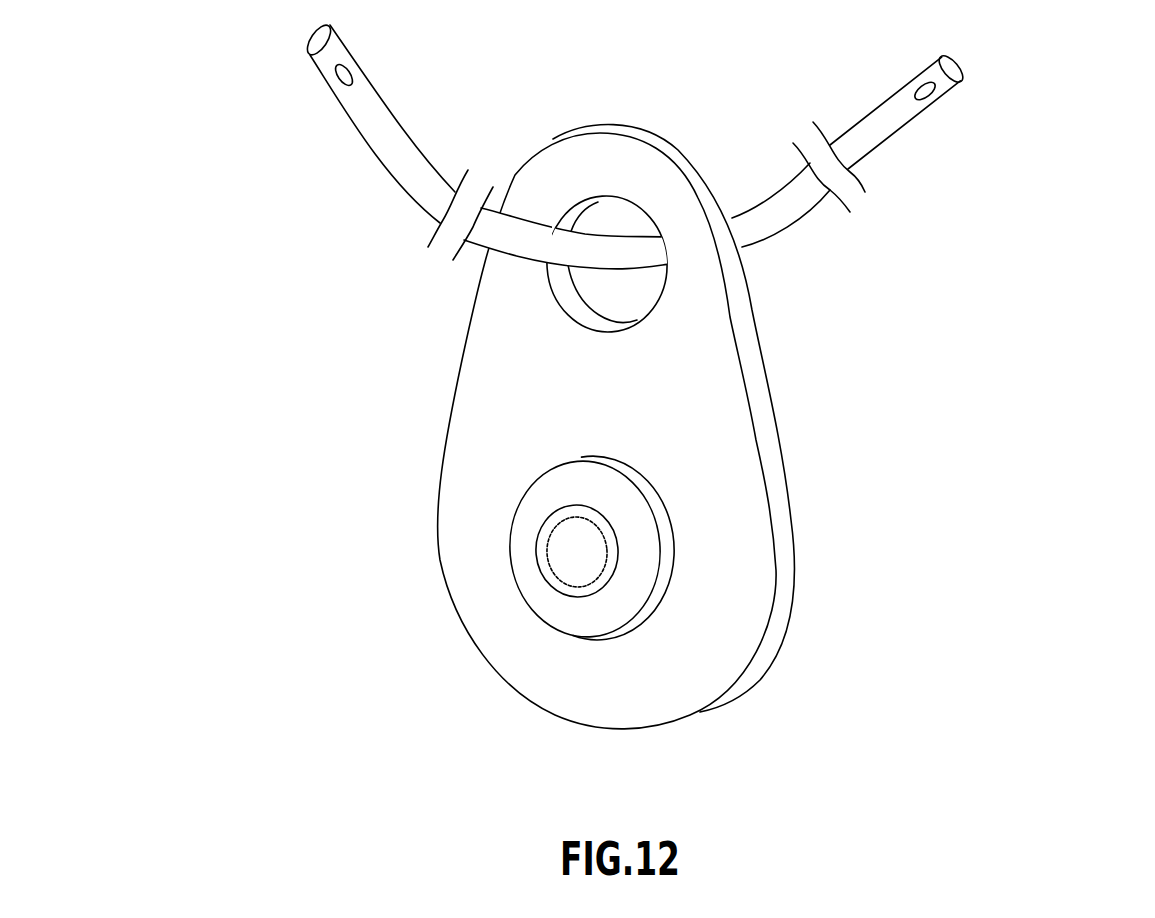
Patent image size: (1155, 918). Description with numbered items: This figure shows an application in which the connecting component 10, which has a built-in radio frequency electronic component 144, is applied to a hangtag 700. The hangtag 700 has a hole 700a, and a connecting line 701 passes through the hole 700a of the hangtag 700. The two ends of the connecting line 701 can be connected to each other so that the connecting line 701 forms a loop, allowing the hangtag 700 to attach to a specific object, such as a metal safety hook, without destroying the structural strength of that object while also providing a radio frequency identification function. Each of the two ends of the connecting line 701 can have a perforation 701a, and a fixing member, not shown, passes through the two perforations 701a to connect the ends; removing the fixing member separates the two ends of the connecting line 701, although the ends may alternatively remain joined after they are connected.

The connecting component 10 is at (540, 615).
The radio frequency electronic component 144 is at (542, 540).
The hangtag 700 is at (820, 534).
The hole 700a is at (602, 196).
The connecting line 701 is at (386, 166).
The perforation 701a is at (950, 97).